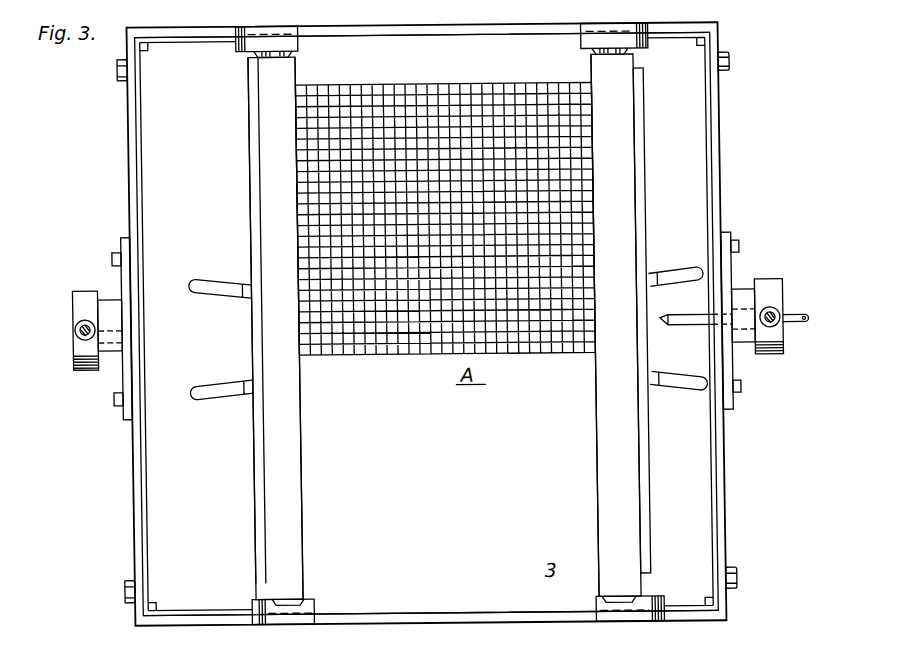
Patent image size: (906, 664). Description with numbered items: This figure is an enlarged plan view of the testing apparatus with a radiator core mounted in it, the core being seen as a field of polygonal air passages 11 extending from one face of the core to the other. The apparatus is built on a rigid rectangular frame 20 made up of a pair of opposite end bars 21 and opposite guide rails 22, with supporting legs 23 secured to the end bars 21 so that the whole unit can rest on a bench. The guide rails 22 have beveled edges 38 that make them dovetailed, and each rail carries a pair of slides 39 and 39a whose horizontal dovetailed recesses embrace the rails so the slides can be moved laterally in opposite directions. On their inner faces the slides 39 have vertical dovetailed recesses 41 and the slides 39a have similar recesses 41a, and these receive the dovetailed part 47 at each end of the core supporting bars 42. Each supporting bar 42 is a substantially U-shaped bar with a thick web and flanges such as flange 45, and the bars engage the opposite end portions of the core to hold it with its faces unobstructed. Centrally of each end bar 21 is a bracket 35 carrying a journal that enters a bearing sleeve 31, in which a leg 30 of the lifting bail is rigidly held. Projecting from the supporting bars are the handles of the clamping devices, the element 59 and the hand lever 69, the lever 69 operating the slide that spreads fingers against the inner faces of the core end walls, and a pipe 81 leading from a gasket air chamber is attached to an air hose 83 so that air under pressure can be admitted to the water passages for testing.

The polygonal air passages 11 is at (393, 322).
The rigid rectangular frame 20 is at (131, 493).
The end bars 21 is at (135, 548).
The guide rails 22 is at (403, 32).
The supporting legs 23 is at (118, 78).
The legs of the bail 30 is at (76, 326).
The bearing rings or sleeves 31 is at (84, 287).
The bracket 35 is at (122, 392).
The beveled edges 38 is at (190, 38).
The slides 39 is at (303, 44).
The slides 39a is at (618, 36).
The vertical dovetailed recesses 41 is at (268, 60).
The vertical dovetailed recesses 41a is at (628, 58).
The core supporting bars 42 is at (304, 493).
The flange 45 is at (444, 327).
The dovetailed part 47 is at (598, 47).
The upper handle 59 is at (222, 280).
The hand lever 69 is at (226, 384).
The pipe or tube 81 is at (664, 320).
The air hose 83 is at (794, 315).